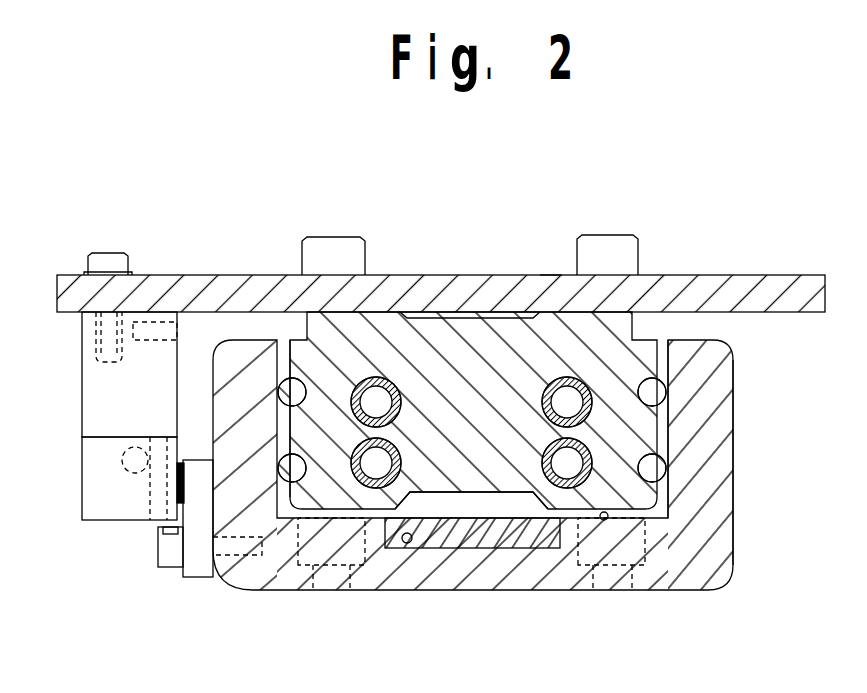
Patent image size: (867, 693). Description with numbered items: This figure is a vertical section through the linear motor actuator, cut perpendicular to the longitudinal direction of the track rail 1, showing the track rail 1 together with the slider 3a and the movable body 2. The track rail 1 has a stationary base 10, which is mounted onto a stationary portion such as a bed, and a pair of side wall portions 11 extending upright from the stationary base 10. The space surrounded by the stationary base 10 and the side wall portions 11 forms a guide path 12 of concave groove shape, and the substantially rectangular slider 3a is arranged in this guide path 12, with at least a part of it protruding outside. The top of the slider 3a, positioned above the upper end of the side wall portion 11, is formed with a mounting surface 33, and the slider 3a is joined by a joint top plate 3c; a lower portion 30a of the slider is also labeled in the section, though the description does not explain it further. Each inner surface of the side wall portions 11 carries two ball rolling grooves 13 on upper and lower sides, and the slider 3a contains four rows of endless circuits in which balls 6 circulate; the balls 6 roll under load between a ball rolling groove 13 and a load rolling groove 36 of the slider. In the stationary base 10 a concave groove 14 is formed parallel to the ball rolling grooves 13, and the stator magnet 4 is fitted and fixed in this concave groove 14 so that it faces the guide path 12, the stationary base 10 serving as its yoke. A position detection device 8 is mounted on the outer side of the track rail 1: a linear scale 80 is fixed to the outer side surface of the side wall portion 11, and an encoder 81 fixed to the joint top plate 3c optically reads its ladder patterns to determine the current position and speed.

The track rail 1 is at (748, 577).
The movable body 2 is at (650, 233).
The slider 3a is at (424, 335).
The joint top plate 3c is at (763, 275).
The stator magnet 4 is at (507, 498).
The ball 6 is at (298, 378).
The position detection device 8 is at (88, 530).
The stationary base 10 is at (448, 590).
The side wall portion 11 is at (736, 540).
The guide path 12 is at (604, 521).
The ball rolling groove 13 is at (284, 384).
The concave groove 14 is at (405, 543).
The projection of end plate 30a is at (533, 493).
The mounting surface 33 is at (550, 275).
The load rolling groove 36 is at (663, 386).
The linear scale 80 is at (178, 487).
The encoder 81 is at (82, 455).